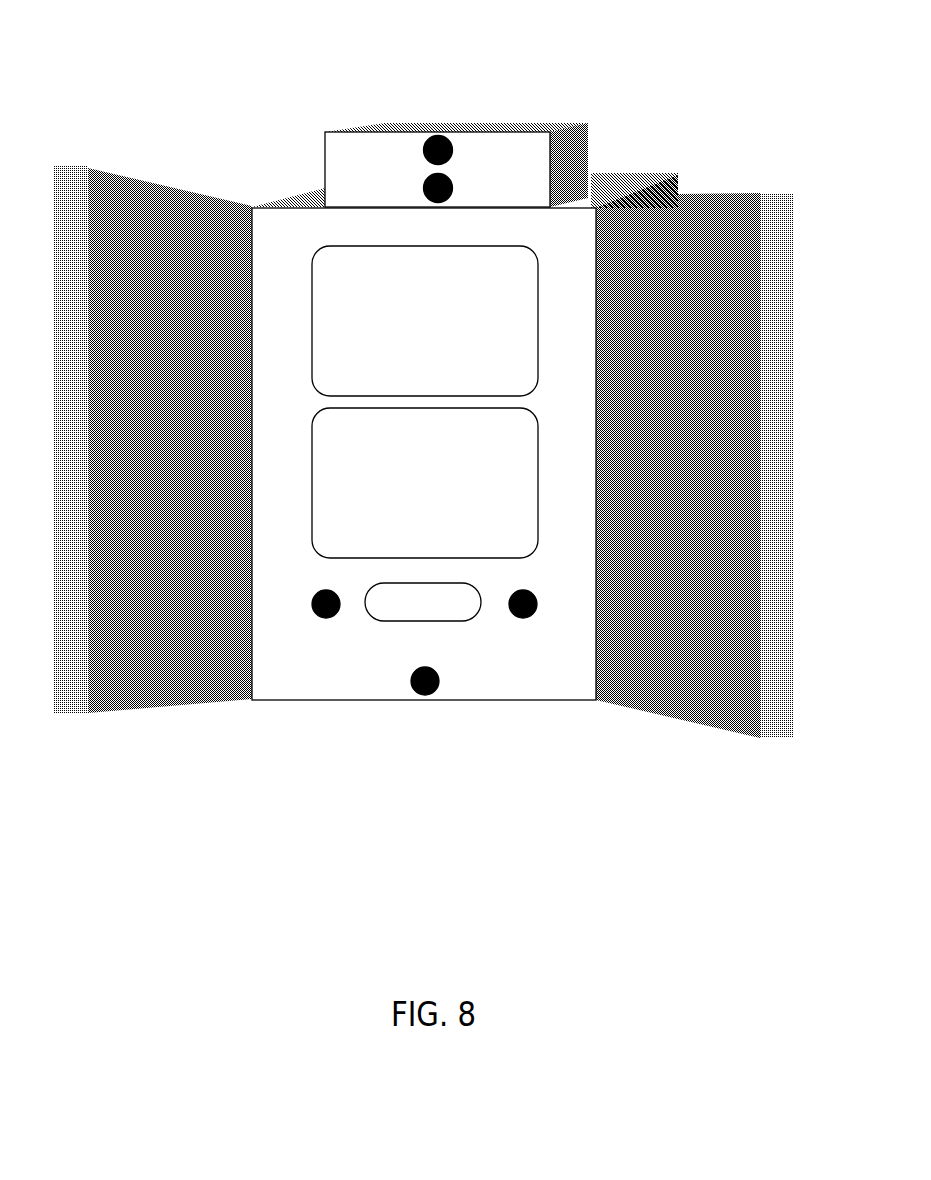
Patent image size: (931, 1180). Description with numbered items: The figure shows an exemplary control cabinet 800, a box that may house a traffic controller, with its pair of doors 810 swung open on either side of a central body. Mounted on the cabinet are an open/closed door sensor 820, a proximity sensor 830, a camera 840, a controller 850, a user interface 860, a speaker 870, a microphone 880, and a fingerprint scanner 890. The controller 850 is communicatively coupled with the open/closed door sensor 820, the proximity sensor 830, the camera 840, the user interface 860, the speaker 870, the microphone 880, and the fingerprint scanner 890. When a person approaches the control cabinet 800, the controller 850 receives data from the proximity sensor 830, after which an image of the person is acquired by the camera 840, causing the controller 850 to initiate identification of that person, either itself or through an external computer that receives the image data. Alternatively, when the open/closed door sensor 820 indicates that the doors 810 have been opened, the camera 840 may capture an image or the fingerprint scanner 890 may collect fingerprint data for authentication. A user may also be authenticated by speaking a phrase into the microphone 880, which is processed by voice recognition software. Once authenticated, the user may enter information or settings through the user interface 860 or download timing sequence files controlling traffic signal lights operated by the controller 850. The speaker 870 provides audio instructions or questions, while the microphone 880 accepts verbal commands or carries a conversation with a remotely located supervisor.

The control cabinet 800 is at (497, 692).
The doors 810 is at (147, 700).
The open/closed door sensor 820 is at (417, 687).
The proximity sensor 830 is at (420, 129).
The camera 840 is at (422, 172).
The controller 850 is at (436, 339).
The user interface 860 is at (436, 501).
The speaker 870 is at (322, 608).
The microphone 880 is at (520, 607).
The fingerprint scanner 890 is at (434, 606).